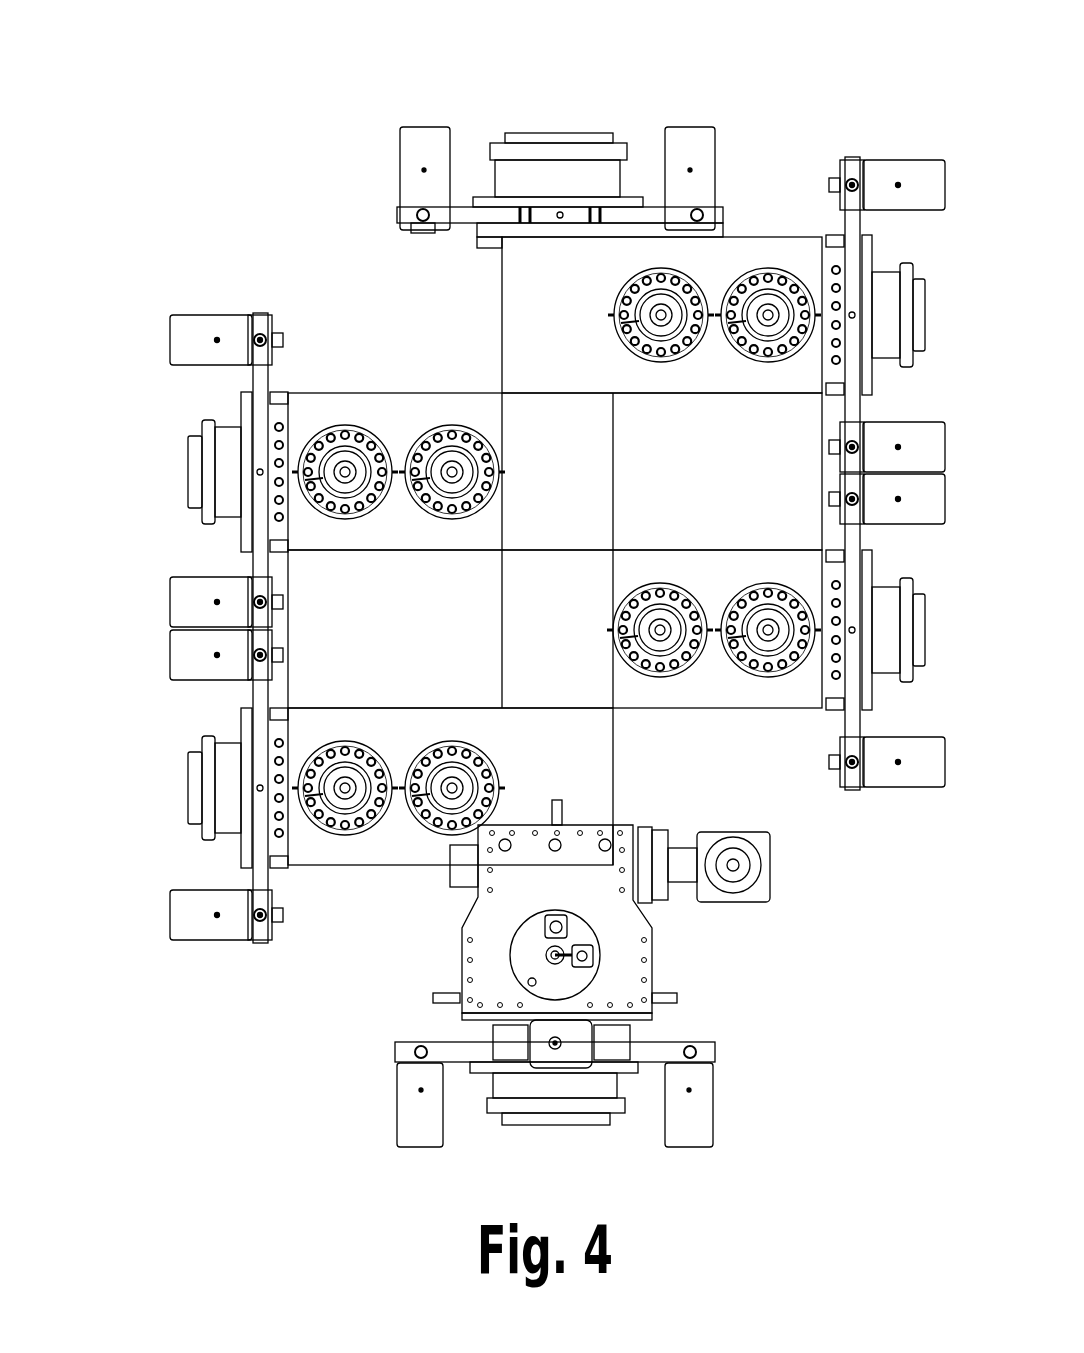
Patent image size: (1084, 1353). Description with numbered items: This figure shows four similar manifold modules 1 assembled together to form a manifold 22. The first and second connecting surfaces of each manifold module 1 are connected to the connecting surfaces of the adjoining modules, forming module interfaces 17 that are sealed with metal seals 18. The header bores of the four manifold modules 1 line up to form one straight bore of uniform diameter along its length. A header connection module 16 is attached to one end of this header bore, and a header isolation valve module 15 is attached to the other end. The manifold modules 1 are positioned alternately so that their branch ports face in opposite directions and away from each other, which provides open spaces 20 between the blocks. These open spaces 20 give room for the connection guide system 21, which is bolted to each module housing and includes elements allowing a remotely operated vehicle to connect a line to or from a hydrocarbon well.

The manifold module 1 is at (496, 588).
The header isolation valve module 15 is at (622, 968).
The header connection module 16 is at (540, 138).
The module interface 17 is at (557, 392).
The metal seal 18 is at (560, 550).
The open space between blocks 20 is at (405, 658).
The connection guide system 21 is at (183, 662).
The manifold 22 is at (552, 288).